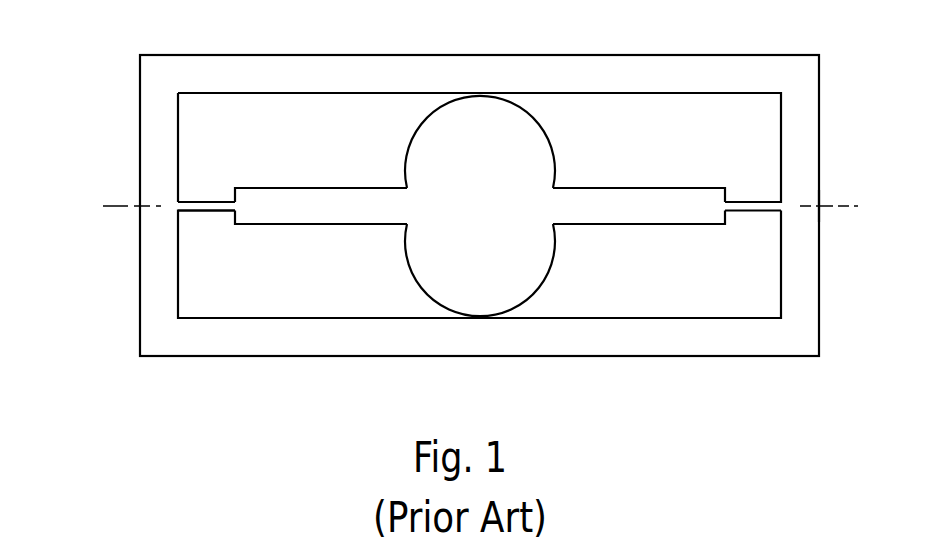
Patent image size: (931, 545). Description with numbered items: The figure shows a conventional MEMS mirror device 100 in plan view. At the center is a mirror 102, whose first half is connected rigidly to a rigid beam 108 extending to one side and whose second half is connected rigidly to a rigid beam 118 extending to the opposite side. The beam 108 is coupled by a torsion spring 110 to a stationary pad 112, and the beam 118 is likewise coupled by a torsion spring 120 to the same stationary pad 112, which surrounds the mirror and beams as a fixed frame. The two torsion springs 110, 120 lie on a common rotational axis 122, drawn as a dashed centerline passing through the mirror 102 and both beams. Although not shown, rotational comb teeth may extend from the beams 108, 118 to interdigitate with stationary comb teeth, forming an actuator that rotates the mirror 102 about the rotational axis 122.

The MEMS mirror device 100 is at (100, 57).
The mirror 102 is at (497, 216).
The rigid beam 108 is at (345, 218).
The torsion spring 110 is at (206, 204).
The stationary pad 112 is at (148, 328).
The rigid beam 118 is at (648, 216).
The torsion spring 120 is at (743, 203).
The rotational axis 122 is at (840, 204).